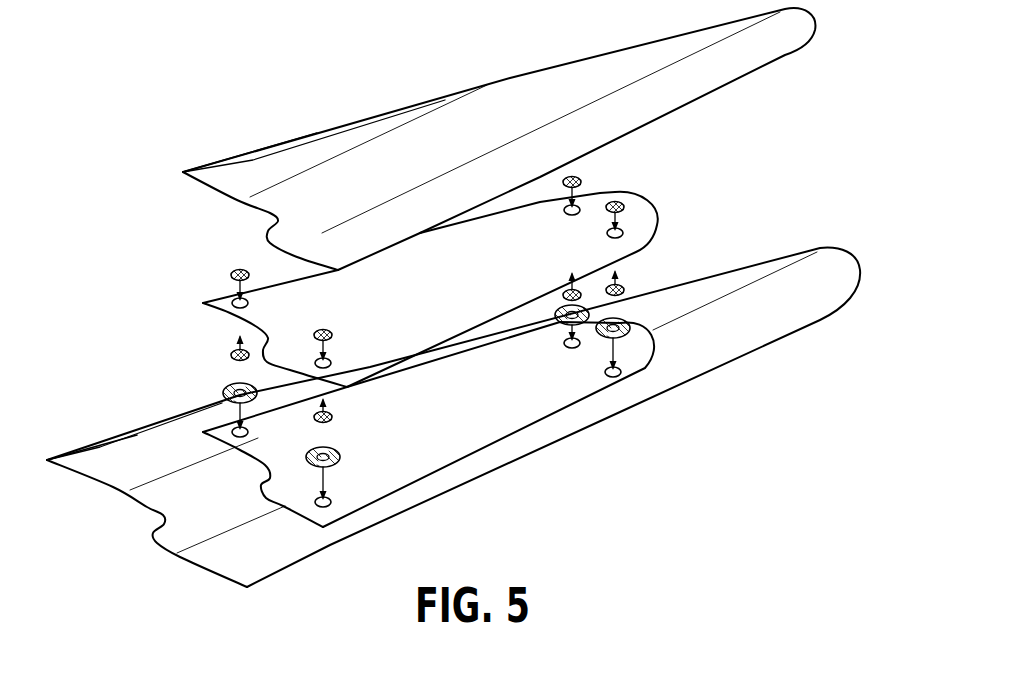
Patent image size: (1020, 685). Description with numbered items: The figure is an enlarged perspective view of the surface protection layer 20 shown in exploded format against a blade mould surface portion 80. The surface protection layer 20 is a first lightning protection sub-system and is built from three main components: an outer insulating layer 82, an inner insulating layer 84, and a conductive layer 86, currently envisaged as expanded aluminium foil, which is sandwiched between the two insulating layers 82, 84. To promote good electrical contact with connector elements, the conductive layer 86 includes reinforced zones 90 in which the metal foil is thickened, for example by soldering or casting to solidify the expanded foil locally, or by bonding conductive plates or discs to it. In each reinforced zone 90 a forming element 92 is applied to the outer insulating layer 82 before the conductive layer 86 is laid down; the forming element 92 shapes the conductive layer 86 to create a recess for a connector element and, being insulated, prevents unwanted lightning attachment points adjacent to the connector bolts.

The surface protection layer 20 is at (155, 198).
The blade mould surface portion 80 is at (770, 310).
The outer insulating layer 82 is at (498, 418).
The inner insulating layer 84 is at (550, 73).
The conductive layer 86 is at (635, 206).
The reinforced zones 90 is at (592, 185).
The forming element 92 is at (553, 313).